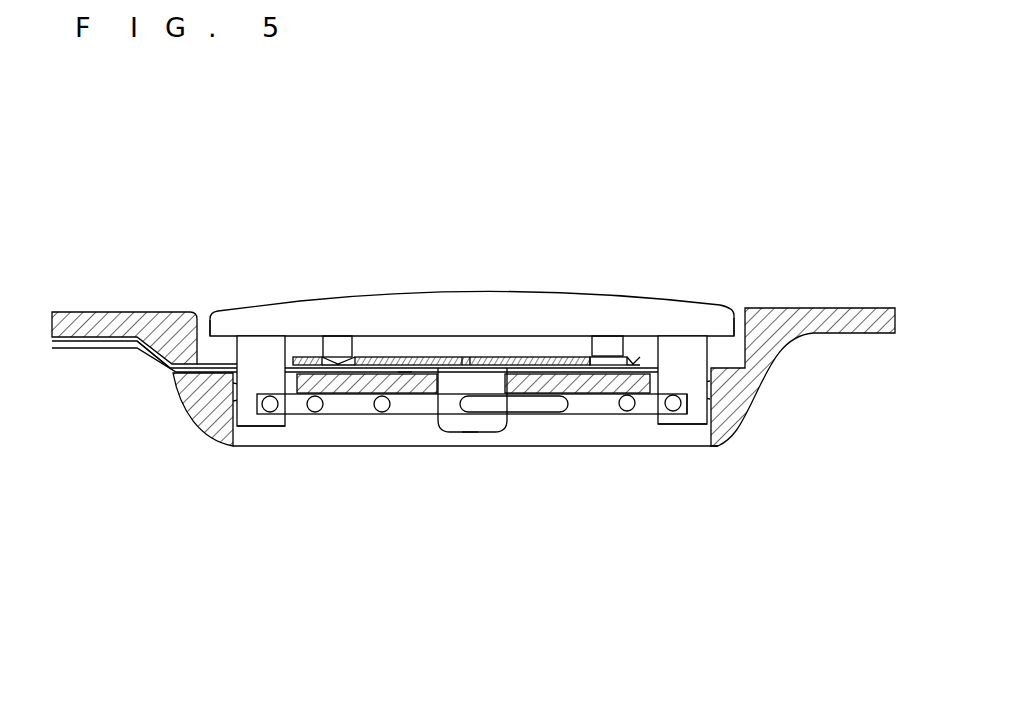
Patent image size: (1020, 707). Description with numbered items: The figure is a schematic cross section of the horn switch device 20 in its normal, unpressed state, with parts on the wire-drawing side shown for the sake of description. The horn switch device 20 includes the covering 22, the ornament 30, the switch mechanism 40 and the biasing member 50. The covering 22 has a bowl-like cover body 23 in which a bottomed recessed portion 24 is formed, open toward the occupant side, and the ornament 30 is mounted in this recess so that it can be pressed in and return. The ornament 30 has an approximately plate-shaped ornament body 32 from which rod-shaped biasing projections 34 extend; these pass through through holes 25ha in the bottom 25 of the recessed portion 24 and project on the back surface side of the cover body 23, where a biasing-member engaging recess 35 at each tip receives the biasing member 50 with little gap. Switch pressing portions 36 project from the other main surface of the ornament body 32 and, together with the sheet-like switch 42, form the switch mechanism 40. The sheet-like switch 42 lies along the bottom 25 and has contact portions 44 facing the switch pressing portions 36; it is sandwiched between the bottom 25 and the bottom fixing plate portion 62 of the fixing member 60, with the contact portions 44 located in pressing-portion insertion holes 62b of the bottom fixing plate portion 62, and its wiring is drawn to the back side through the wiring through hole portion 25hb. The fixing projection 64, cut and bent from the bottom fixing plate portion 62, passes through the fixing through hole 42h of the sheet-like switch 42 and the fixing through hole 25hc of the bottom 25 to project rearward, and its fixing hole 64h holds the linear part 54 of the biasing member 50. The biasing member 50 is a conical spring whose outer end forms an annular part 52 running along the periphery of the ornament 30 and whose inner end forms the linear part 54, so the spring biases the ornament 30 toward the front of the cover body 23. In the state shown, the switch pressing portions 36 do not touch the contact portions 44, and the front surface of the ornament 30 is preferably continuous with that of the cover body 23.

The horn switch device 20 is at (532, 225).
The covering 22 is at (473, 344).
The cover body 23 is at (826, 328).
The recessed portion 24 is at (214, 314).
The bottom 25 is at (442, 421).
The through hole 25ha is at (232, 403).
The wiring through hole portion 25hb is at (172, 370).
The fixing through hole 25hc is at (405, 414).
The ornament 30 is at (472, 277).
The ornament body 32 is at (723, 310).
The biasing projection 34 is at (232, 446).
The biasing-member engaging recess 35 is at (270, 428).
The switch pressing portion 36 is at (340, 340).
The switch mechanism 40 is at (511, 378).
The sheet-like switch 42 is at (441, 310).
The fixing through hole 42h is at (466, 310).
The contact portion 44 is at (316, 413).
The biasing member 50 is at (472, 454).
The annular part 52 is at (680, 415).
The linear part 54 is at (462, 405).
The fixing member 60 is at (587, 357).
The bottom fixing plate portion 62 is at (475, 321).
The pressing-portion insertion hole 62b is at (333, 357).
The fixing projection 64 is at (481, 443).
The fixing hole 64h is at (470, 432).